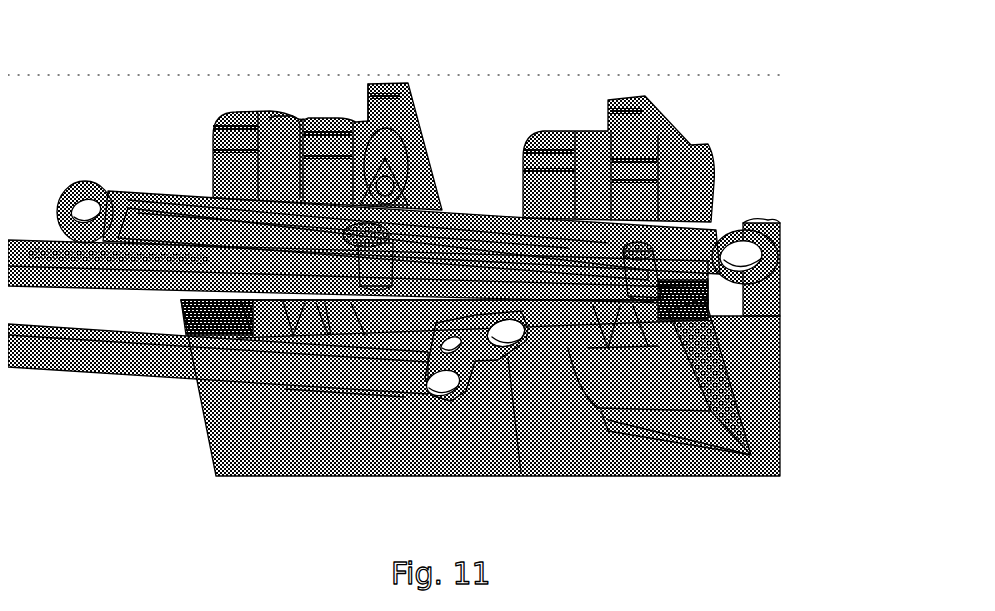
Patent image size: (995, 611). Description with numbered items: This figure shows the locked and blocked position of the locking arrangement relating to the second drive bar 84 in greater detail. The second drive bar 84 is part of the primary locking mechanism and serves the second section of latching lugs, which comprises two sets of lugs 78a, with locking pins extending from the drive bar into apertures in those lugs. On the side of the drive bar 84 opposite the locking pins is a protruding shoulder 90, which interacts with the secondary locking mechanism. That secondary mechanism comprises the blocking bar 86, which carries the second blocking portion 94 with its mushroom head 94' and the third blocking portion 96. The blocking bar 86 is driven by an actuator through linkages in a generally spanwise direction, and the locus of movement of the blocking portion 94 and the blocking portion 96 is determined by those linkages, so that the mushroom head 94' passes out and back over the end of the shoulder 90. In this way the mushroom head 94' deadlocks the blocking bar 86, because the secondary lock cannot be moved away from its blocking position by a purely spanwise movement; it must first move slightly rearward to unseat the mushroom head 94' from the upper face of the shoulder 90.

The sets of lugs 78a is at (228, 138).
The second drive bar 84 is at (120, 193).
The blocking bar 86 is at (73, 257).
The protruding shoulder 90 is at (315, 230).
The second blocking portion 94 is at (418, 191).
The mushroom head 94' is at (410, 126).
The third blocking portion 96 is at (625, 248).